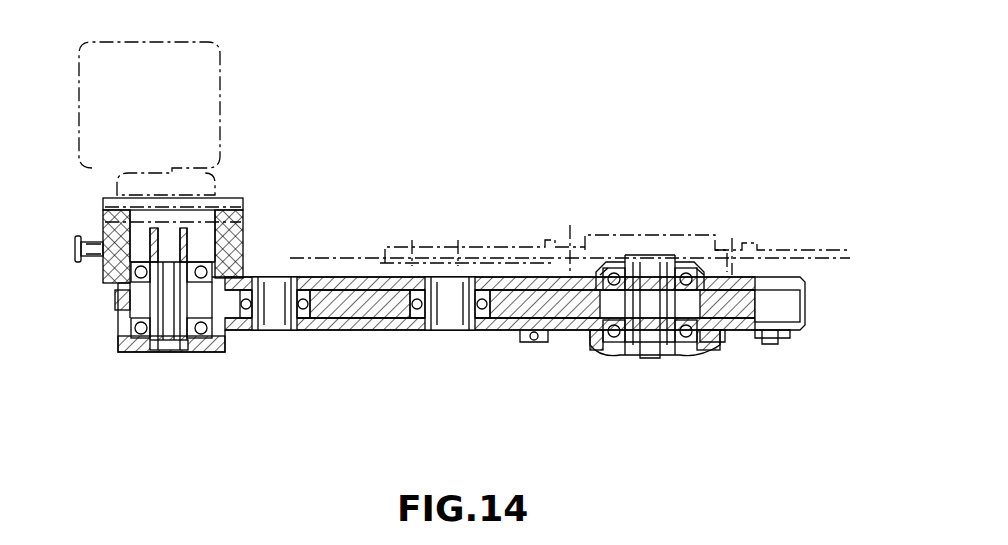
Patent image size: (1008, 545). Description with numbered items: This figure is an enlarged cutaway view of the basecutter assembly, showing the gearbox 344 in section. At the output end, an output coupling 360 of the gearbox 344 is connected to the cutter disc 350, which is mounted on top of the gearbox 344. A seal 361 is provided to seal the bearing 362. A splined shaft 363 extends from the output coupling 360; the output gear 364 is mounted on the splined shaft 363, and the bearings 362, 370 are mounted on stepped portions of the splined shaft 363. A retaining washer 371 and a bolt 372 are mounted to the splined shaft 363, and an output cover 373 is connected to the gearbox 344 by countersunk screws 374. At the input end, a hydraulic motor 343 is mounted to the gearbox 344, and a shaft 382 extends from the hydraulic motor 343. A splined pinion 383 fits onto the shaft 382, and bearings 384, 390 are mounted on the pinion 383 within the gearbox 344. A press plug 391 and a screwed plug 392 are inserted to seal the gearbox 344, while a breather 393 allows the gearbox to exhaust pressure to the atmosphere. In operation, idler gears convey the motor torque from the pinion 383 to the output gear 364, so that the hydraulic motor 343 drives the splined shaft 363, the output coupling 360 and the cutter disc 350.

The hydraulic motor 343 is at (222, 92).
The shaft 382 is at (243, 200).
The splined pinion 383 is at (225, 255).
The bearing 384 is at (240, 262).
The breather 393 is at (103, 250).
The screwed plug 392 is at (118, 305).
The bearing 390 is at (230, 345).
The press plug 391 is at (178, 352).
The gearbox 344 is at (323, 332).
The cutter disc 350 is at (770, 250).
The output coupling 360 is at (685, 235).
The seal 361 is at (632, 260).
The bearing 362 is at (648, 262).
The splined shaft 363 is at (690, 345).
The bearing 370 is at (640, 350).
The retaining washer 371 is at (650, 352).
The bolt 372 is at (662, 352).
The output cover 373 is at (718, 348).
The output gear 364 is at (760, 340).
The countersunk screws 374 is at (547, 346).